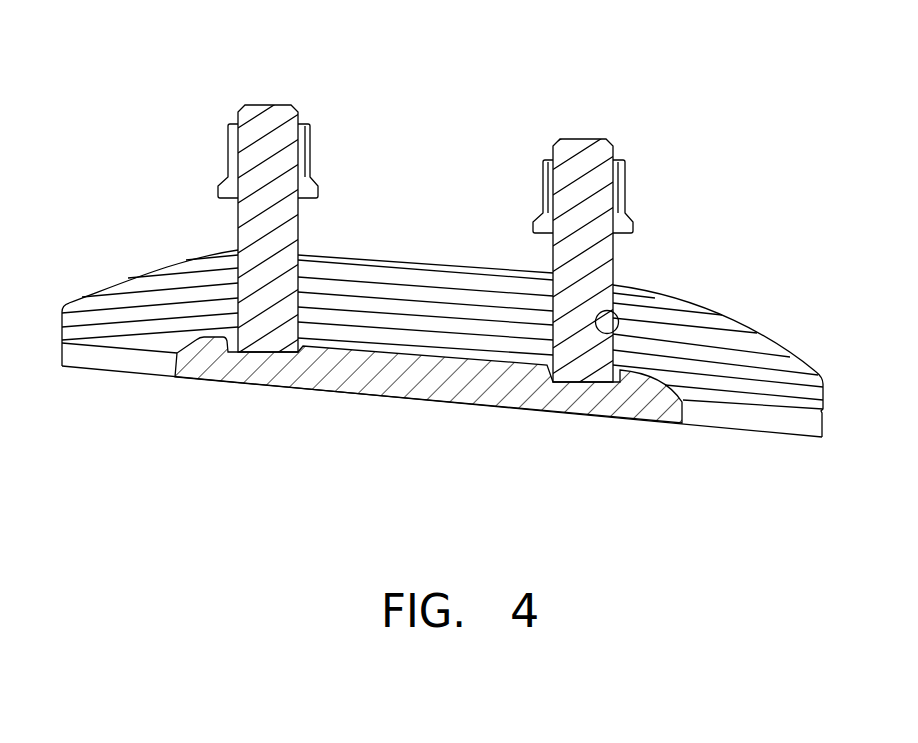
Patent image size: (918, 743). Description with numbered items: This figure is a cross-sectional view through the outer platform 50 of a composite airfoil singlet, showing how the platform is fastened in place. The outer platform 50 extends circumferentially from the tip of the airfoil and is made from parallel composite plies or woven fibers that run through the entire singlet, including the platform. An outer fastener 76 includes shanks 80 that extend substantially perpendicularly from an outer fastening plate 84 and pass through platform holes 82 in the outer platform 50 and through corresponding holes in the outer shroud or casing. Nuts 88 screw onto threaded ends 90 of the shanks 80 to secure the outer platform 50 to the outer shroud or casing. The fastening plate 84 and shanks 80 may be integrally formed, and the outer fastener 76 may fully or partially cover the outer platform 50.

The outer fastener 76 is at (305, 95).
The outer platform 50 is at (375, 260).
The threaded end 90 is at (553, 185).
The nut 88 is at (618, 170).
The shank 80 is at (613, 258).
The platform hole 82 is at (615, 332).
The outer fastening plate 84 is at (483, 408).